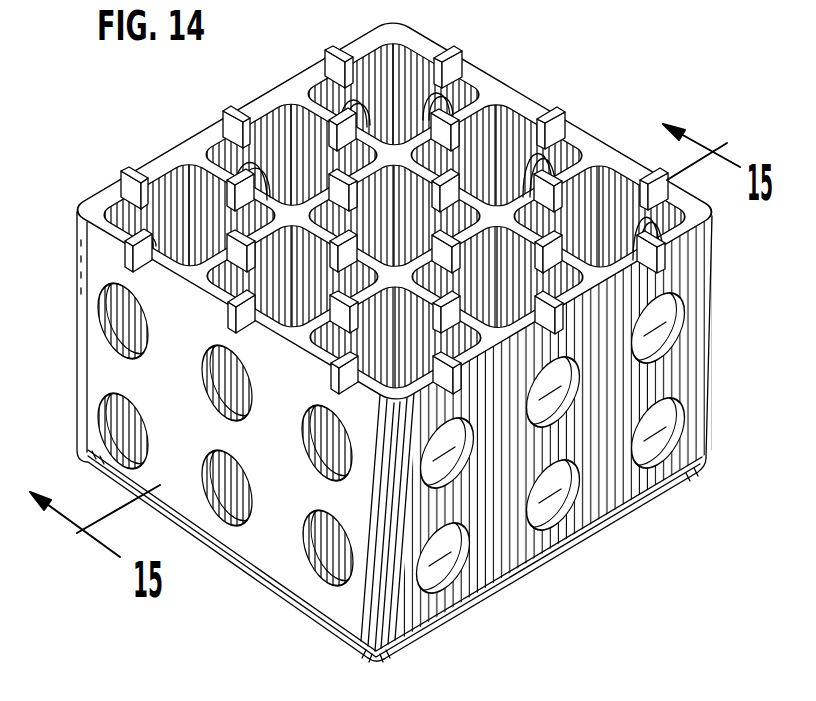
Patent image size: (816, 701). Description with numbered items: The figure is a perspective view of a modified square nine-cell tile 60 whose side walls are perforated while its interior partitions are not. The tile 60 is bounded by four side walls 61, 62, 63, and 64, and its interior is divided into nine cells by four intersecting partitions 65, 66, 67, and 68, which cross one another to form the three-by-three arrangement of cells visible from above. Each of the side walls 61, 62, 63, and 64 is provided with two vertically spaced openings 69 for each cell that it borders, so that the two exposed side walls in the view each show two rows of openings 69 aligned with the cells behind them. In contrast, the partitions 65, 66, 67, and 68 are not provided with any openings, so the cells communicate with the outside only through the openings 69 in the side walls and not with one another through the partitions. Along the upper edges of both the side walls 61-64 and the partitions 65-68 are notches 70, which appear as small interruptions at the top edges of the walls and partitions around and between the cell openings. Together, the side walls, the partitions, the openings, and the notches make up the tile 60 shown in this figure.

The tile 60 is at (517, 553).
The side wall 61 is at (277, 570).
The side wall 62 is at (250, 113).
The side wall 63 is at (520, 97).
The side wall 64 is at (620, 494).
The partition 65 is at (217, 182).
The partition 66 is at (318, 58).
The partition 67 is at (570, 167).
The partition 68 is at (463, 100).
The openings 69 is at (125, 331).
The notches 70 is at (450, 52).